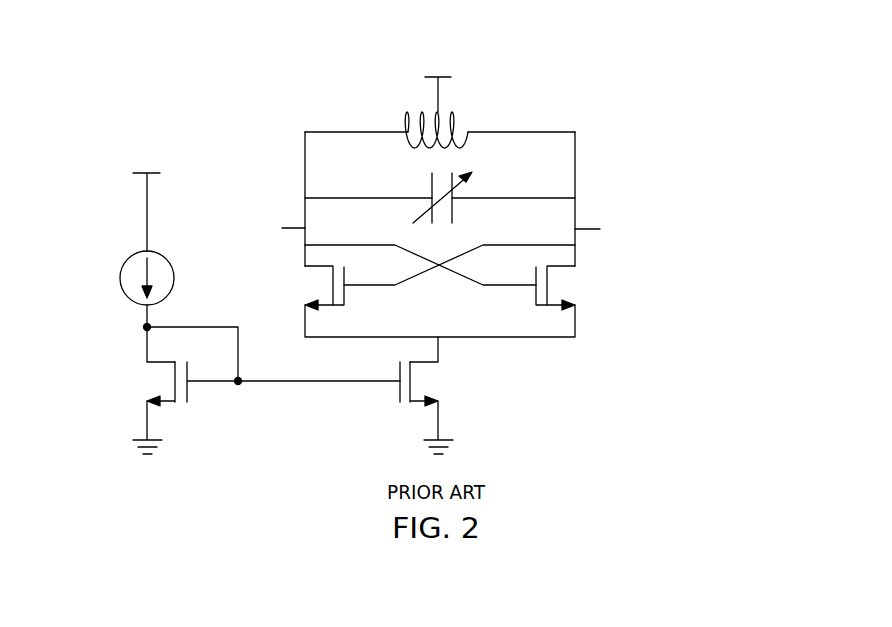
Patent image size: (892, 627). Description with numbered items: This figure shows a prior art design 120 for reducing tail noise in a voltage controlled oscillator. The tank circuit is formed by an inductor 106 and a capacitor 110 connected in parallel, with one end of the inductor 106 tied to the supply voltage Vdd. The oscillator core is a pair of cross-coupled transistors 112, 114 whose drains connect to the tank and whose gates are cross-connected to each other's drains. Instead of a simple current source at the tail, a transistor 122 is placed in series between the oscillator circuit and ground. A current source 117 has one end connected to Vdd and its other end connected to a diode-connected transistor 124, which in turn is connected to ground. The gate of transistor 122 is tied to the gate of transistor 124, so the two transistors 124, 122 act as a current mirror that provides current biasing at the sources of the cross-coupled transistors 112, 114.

The design 120 is at (592, 78).
The inductor 106 is at (458, 115).
The capacitor 110 is at (431, 180).
The cross-coupled transistor 112 is at (345, 299).
The cross-coupled transistor 114 is at (537, 299).
The current source 117 is at (120, 276).
The transistor 122 is at (412, 404).
The diode-connected transistor 124 is at (172, 404).